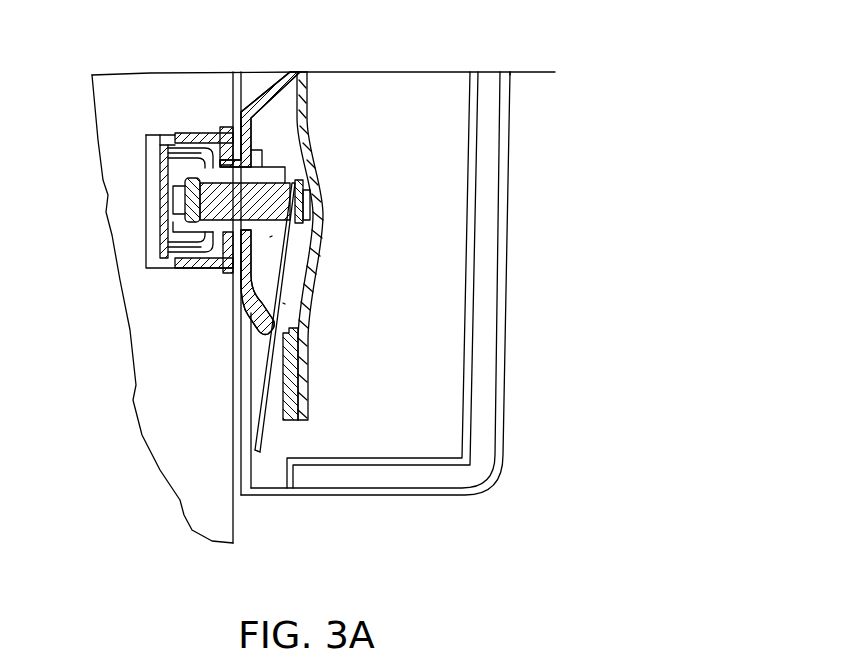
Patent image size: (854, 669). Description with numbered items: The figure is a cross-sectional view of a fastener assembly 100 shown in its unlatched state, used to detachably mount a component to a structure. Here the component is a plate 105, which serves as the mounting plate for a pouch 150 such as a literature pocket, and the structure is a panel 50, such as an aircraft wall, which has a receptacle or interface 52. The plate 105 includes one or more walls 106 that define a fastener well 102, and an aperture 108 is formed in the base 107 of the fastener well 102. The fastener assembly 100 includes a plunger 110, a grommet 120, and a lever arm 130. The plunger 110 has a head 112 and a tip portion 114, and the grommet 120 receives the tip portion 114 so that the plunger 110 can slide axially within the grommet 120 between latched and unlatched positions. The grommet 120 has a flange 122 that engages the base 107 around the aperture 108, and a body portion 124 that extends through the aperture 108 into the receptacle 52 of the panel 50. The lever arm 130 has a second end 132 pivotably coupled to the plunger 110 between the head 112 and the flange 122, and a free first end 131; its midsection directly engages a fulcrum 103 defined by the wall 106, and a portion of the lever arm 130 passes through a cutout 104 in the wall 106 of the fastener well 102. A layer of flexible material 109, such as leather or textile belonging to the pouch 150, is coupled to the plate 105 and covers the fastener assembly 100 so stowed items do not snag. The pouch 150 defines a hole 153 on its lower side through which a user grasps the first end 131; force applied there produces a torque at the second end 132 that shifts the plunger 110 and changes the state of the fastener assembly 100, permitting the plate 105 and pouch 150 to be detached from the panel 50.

The fastener assembly 100 is at (152, 92).
The panel 50 is at (141, 124).
The receptacle/interface 52 is at (160, 183).
The fulcrum 103 is at (267, 333).
The cutout 104 is at (289, 328).
The plate 105 is at (268, 90).
The wall 106 is at (257, 325).
The base 107 is at (235, 110).
The aperture 108 is at (223, 155).
The flexible material 109 is at (307, 92).
The plunger 110 is at (278, 170).
The head 112 is at (313, 199).
The tip portion 114 is at (178, 180).
The grommet 120 is at (290, 252).
The flange 122 is at (256, 147).
The body portion 124 is at (168, 228).
The lever arm 130 is at (283, 303).
The first end 131 is at (258, 448).
The second end 132 is at (271, 234).
The pouch 150 is at (470, 125).
The hole 153 is at (275, 478).
The fastener well 102 is at (282, 147).